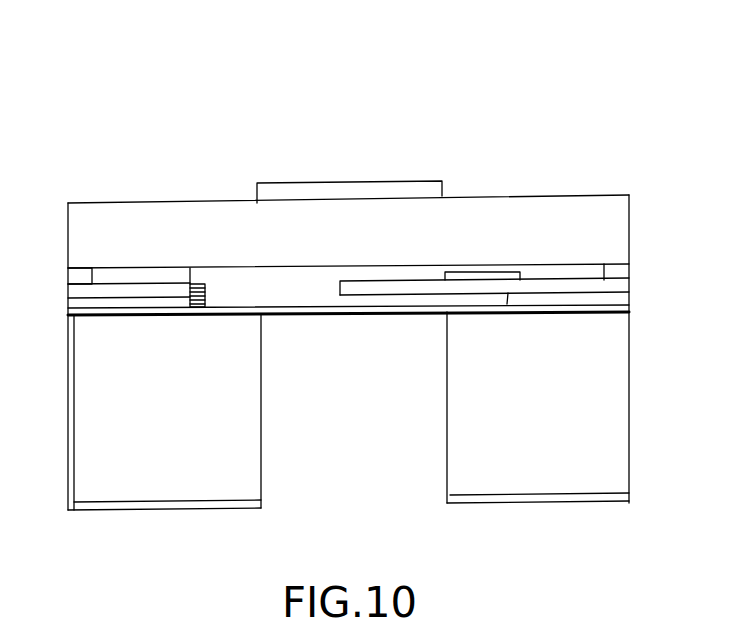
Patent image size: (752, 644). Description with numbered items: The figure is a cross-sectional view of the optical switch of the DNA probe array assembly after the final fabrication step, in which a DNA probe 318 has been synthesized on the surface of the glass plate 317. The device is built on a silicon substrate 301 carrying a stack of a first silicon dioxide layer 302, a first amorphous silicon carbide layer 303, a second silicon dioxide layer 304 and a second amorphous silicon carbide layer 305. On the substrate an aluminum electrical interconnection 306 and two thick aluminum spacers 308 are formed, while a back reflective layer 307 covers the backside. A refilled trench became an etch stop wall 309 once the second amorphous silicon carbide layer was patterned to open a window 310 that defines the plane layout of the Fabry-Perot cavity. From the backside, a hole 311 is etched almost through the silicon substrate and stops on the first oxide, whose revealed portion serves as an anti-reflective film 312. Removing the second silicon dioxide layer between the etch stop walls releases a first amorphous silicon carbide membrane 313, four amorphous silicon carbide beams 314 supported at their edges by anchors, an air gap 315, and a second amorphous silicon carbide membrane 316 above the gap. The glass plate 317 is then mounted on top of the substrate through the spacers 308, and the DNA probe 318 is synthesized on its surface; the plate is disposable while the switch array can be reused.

The silicon substrate 301 is at (164, 449).
The first silicon dioxide layer 302 is at (144, 433).
The first amorphous silicon carbide layer 303 is at (581, 198).
The second silicon dioxide layer 304 is at (536, 422).
The second amorphous silicon carbide layer 305 is at (593, 429).
The electrical interconnection 306 is at (474, 192).
The back reflective layer 307 is at (538, 445).
The spacers 308 is at (80, 193).
The etch stop wall 309 is at (179, 201).
The window 310 is at (238, 186).
The hole 311 is at (304, 482).
The anti-reflective film 312 is at (380, 417).
The first amorphous silicon carbide membrane 313 is at (402, 173).
The amorphous silicon carbide beams 314 is at (492, 171).
The air gap 315 is at (484, 201).
The second amorphous silicon carbide membrane 316 is at (297, 184).
The glass plate 317 is at (133, 148).
The DNA probe 318 is at (349, 121).